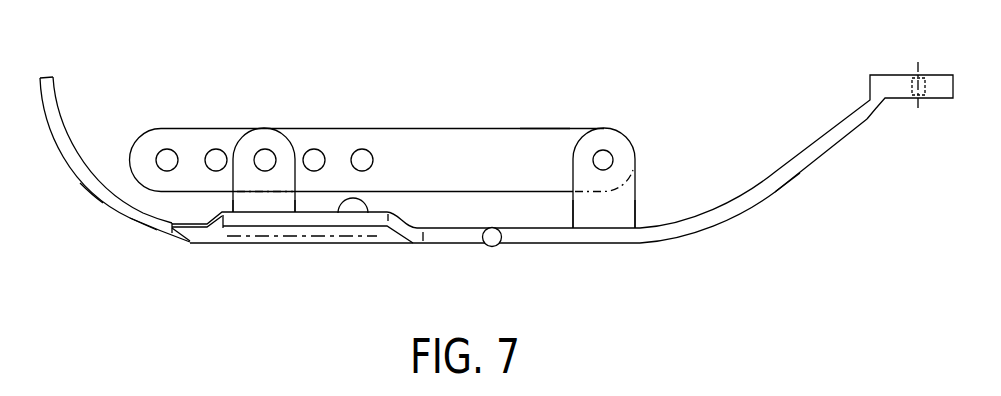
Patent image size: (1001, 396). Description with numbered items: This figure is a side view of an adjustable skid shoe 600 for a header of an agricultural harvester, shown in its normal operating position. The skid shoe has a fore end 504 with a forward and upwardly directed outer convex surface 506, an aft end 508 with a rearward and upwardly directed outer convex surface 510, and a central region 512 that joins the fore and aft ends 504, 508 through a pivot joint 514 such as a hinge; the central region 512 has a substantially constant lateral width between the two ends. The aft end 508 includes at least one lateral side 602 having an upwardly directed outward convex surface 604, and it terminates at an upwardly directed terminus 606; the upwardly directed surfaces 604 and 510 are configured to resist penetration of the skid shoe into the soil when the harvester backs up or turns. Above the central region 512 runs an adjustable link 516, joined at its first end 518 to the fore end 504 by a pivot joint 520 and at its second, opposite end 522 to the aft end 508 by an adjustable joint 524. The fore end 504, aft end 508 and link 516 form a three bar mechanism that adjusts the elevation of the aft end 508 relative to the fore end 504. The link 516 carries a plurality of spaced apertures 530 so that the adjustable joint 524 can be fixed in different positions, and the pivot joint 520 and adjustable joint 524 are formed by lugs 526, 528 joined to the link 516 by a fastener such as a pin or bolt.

The strap assembly 600 is at (205, 33).
The upwardly directed terminus 606 is at (47, 73).
The outer convex surface 510 is at (102, 197).
The aft end 508 is at (147, 233).
The central region 512 is at (459, 271).
The outward convex surface 604 is at (307, 218).
The lateral side 602 is at (368, 213).
The pivot joint 514 is at (492, 244).
The fore end 504 is at (739, 244).
The outer convex surface 506 is at (790, 187).
The adjustable link 516 is at (475, 128).
The second end 522 is at (163, 128).
The first end 518 is at (544, 125).
The spaced apertures 530 is at (383, 166).
The adjustable joint 524 is at (277, 137).
The lug 528 is at (267, 203).
The pivot joint 520 is at (629, 126).
The lug 526 is at (628, 200).